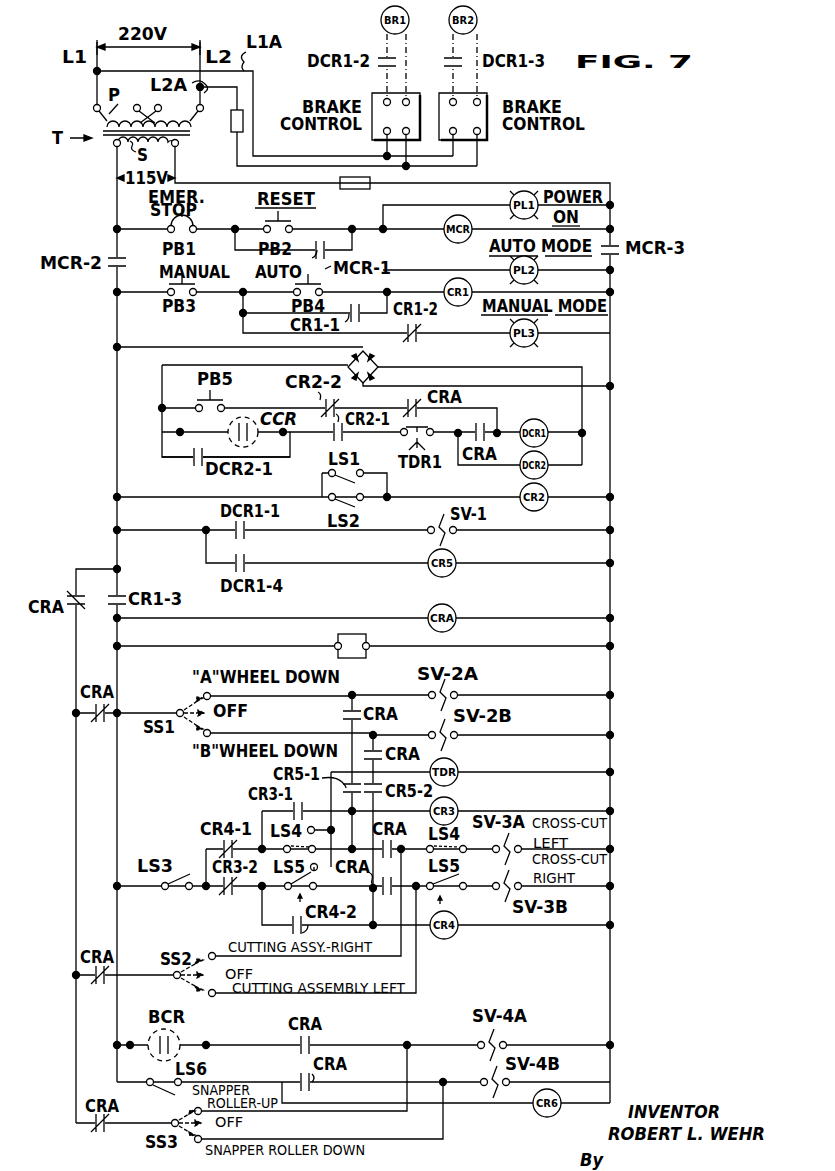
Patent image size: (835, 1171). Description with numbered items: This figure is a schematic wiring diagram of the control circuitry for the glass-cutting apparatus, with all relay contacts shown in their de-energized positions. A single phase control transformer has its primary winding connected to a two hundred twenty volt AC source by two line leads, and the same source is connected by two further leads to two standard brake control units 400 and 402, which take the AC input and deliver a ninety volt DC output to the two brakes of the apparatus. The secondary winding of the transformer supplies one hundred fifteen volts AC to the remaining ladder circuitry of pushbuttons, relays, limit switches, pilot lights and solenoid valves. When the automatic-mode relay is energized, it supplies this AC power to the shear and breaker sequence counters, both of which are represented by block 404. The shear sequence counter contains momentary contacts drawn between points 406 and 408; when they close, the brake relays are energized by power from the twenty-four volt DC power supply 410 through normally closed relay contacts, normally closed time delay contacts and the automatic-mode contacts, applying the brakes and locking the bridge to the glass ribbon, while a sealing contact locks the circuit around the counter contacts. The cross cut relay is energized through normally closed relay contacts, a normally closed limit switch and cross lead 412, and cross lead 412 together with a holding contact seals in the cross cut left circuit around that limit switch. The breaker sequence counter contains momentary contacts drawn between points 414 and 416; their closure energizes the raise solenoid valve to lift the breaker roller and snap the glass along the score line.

The brake control unit 400 is at (373, 93).
The brake control unit 402 is at (486, 93).
The shear and breaker sequence counters block 404 is at (368, 644).
The point 406 is at (176, 432).
The point 408 is at (284, 432).
The 24 v. DC power supply 410 is at (368, 354).
The cross lead 412 is at (352, 821).
The point 414 is at (129, 1039).
The point 416 is at (203, 1042).